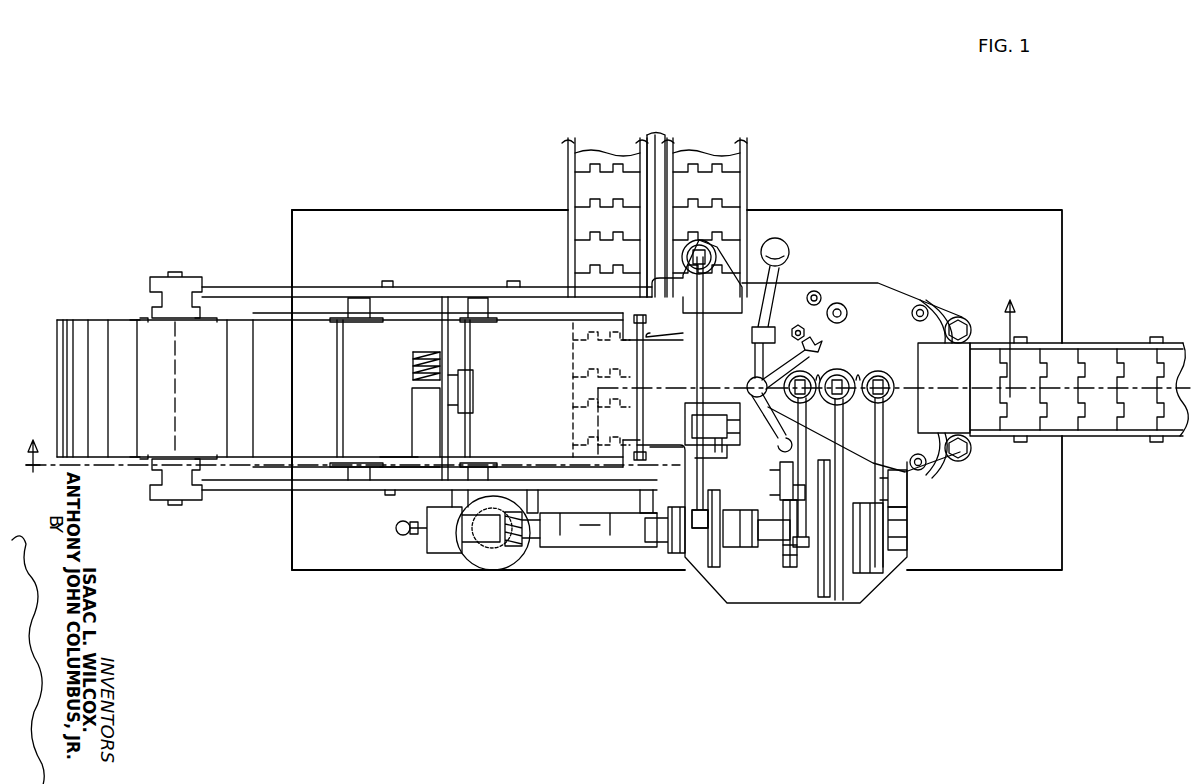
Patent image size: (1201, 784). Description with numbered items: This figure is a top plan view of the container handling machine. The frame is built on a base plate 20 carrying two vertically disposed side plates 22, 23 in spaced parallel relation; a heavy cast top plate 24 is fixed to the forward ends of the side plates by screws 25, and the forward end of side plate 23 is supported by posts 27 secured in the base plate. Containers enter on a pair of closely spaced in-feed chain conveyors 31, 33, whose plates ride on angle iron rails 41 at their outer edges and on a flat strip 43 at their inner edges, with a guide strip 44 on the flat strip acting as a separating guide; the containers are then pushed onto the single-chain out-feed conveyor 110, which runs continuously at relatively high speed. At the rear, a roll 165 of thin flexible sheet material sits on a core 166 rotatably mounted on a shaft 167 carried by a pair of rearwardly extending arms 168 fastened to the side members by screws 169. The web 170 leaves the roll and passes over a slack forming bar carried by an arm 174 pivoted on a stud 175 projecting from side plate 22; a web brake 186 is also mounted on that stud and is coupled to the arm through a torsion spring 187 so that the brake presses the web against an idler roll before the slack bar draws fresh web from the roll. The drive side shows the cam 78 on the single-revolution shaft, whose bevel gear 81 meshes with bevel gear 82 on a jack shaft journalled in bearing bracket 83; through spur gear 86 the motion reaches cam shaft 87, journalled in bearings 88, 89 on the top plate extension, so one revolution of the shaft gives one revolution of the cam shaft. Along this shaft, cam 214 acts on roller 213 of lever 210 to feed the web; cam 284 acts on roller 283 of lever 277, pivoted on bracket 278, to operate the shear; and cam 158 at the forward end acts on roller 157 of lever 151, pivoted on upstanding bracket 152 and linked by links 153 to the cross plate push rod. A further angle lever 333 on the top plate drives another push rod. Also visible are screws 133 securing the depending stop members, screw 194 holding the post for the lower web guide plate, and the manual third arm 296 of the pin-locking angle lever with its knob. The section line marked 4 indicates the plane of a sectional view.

The base plate 20 is at (381, 243).
The web 170 is at (306, 397).
The roll 165 is at (155, 388).
The arms 168 is at (240, 288).
The shaft 167 is at (181, 290).
The core 166 is at (150, 315).
The screws 169 is at (388, 283).
The side plate 23 is at (502, 305).
The side plate 22 is at (424, 480).
The stud 175 is at (412, 353).
The torsion spring 187 is at (412, 375).
The web brake 186 is at (473, 390).
The arm 174 is at (390, 460).
The angle iron members 41 is at (570, 147).
The in-feed chain conveyor 31 is at (613, 162).
The in-feed chain conveyor 33 is at (705, 162).
The flat strip 43 is at (648, 143).
The guide strip 44 is at (660, 150).
The lever 210 is at (704, 365).
The screw 194 is at (816, 290).
The third arm 296 is at (765, 310).
The top plate 24 is at (890, 348).
The links 153 is at (890, 380).
The lever 277 is at (799, 442).
The angle lever 333 is at (839, 442).
The lever 151 is at (881, 442).
The screws 133 is at (925, 302).
The posts 27 is at (969, 326).
The out-feed conveyor 110 is at (1066, 398).
The section line 4 is at (516, 372).
The screws 25 is at (645, 458).
The bearing bracket 83 is at (602, 540).
The beveled gear 81 is at (497, 550).
The cam 78 is at (513, 562).
The bevel gear 82 is at (523, 546).
The spur gear 86 is at (680, 555).
The cam 214 is at (718, 567).
The roller 213 is at (715, 523).
The bearing 89 is at (735, 510).
The cam shaft 87 is at (772, 541).
The cam 284 is at (790, 567).
The roller 283 is at (786, 568).
The bracket 278 is at (776, 484).
The roller 157 is at (868, 535).
The cam 158 is at (855, 545).
The bracket 152 is at (907, 490).
The bearing 88 is at (907, 528).